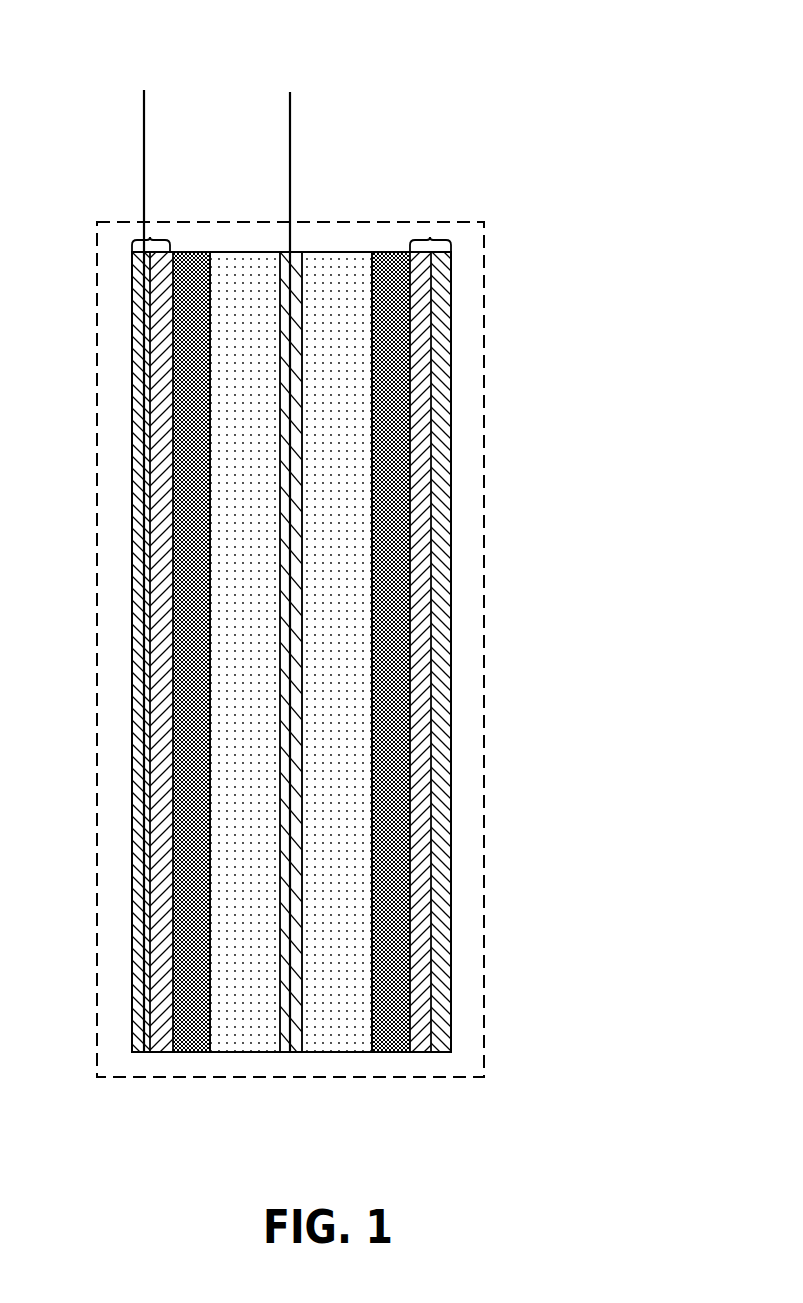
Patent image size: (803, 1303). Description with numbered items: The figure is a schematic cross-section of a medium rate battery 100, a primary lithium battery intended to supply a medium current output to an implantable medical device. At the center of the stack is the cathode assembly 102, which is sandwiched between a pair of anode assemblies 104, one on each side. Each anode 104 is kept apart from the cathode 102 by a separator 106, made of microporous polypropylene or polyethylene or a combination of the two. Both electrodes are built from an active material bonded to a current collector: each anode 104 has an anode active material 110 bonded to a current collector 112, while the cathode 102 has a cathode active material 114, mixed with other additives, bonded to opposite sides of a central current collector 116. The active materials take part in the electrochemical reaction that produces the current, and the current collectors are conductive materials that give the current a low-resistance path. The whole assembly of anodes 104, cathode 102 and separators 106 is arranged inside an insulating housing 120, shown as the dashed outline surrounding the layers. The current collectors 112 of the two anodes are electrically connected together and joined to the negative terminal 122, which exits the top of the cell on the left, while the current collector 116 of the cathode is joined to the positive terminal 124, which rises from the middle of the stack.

The medium rate battery 100 is at (637, 222).
The cathode assembly 102 is at (372, 252).
The anode assembly 104 is at (150, 237).
The separator 106 is at (183, 252).
The anode active material 110 is at (420, 1052).
The current collector 112 is at (440, 1052).
The cathode active material 114 is at (245, 1052).
The current collector 116 is at (296, 1052).
The insulating housing 120 is at (484, 518).
The negative terminal 122 is at (144, 108).
The positive terminal 124 is at (290, 98).